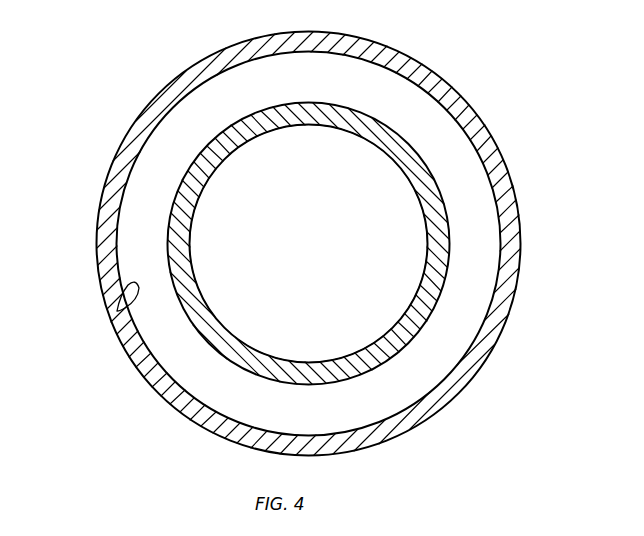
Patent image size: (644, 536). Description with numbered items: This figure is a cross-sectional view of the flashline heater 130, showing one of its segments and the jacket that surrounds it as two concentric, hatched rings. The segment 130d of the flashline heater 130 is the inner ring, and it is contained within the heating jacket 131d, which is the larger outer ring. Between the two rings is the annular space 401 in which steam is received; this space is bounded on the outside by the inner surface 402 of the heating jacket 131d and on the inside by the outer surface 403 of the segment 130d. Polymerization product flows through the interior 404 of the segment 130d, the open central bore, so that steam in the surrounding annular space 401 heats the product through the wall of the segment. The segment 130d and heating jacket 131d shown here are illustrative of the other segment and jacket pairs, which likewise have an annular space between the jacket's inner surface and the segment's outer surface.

The flashline heater 130 is at (497, 77).
The segment of the flashline heater 130d is at (192, 247).
The heating jacket 131d is at (138, 130).
The annular space 401 is at (274, 244).
The inner surface of the heating jacket 402 is at (117, 311).
The outer surface of the segment 403 is at (427, 163).
The interior of the segment 404 is at (378, 305).